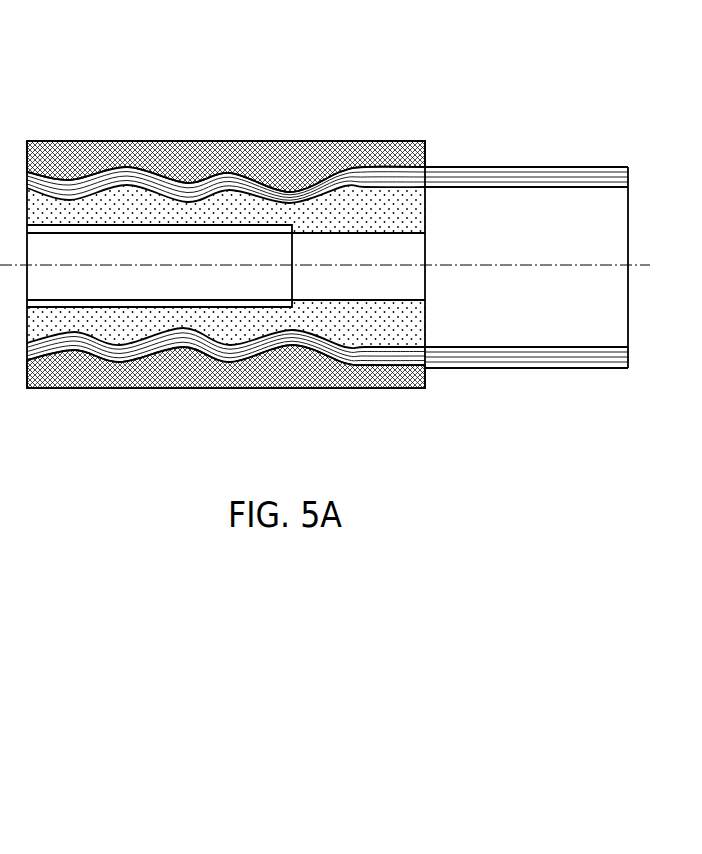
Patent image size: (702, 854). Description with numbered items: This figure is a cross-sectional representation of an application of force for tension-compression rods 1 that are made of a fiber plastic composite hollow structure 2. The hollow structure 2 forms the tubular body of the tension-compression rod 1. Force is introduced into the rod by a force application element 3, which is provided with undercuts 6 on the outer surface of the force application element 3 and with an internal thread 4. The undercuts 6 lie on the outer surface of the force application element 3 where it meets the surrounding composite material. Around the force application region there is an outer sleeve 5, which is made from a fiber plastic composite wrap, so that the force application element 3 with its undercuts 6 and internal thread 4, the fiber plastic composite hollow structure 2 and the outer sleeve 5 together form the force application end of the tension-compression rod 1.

The tension-compression rod 1 is at (333, 222).
The fiber plastic composite hollow structure 2 is at (573, 173).
The force application element 3 is at (368, 203).
The internal thread 4 is at (203, 222).
The outer sleeve 5 is at (290, 158).
The undercuts 6 is at (258, 192).